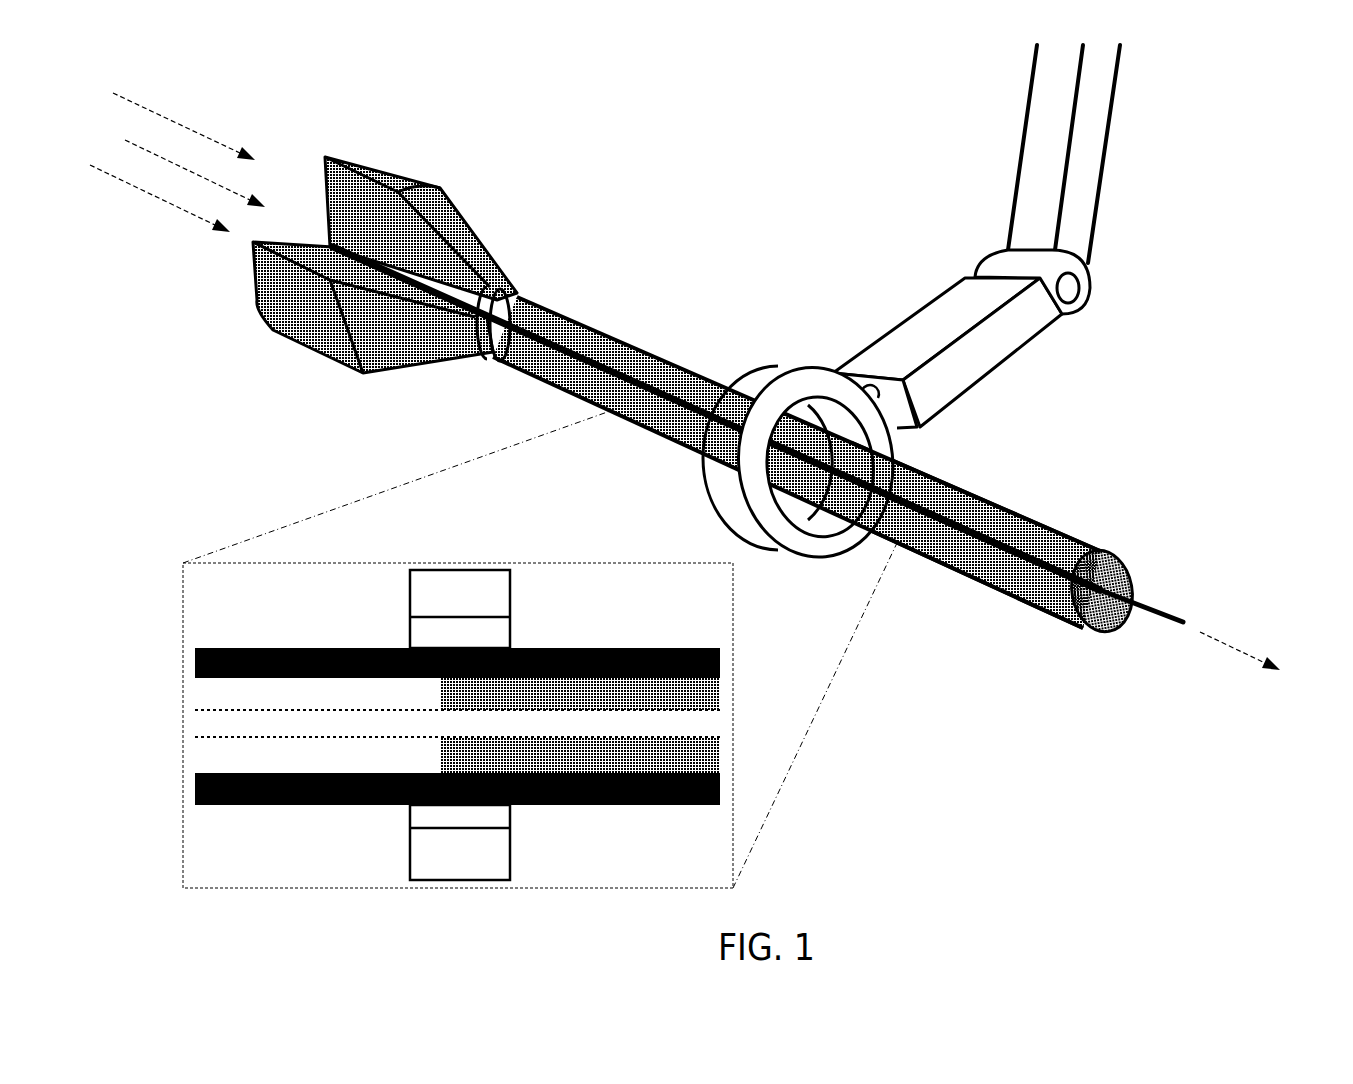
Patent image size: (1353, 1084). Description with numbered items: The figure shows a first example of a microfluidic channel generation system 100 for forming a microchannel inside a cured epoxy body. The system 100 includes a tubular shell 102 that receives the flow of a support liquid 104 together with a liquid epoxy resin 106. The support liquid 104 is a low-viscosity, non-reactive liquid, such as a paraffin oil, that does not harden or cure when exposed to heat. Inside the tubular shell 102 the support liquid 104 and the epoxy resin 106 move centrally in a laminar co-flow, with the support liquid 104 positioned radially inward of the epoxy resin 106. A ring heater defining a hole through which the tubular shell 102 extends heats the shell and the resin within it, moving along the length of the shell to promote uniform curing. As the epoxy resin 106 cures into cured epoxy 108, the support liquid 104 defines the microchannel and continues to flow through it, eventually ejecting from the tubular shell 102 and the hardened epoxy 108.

The microfluidic channel generation system 100 is at (1183, 776).
The tubular shell 102 is at (606, 261).
The support liquid 104 is at (208, 723).
The liquid epoxy resin 106 is at (208, 695).
The cured epoxy 108 is at (722, 688).